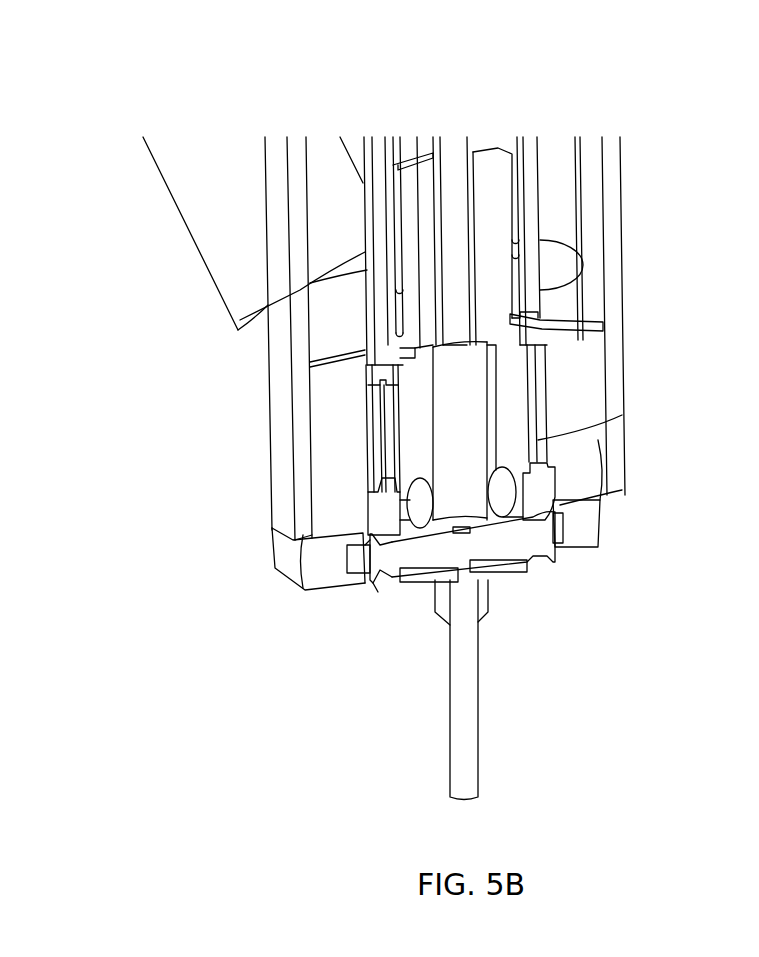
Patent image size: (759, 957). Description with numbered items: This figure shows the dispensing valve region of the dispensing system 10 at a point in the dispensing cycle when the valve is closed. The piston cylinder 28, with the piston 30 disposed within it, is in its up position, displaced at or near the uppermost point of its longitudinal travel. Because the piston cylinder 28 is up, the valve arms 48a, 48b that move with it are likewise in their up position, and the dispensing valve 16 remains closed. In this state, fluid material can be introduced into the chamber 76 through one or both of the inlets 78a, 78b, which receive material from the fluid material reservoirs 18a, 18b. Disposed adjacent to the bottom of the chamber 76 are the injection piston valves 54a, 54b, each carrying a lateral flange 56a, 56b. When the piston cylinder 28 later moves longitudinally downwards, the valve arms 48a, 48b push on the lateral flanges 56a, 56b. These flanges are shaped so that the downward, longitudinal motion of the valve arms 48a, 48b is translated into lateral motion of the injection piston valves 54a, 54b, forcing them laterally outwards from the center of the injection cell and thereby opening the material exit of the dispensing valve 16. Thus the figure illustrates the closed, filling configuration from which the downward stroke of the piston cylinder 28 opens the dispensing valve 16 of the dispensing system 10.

The dispensing system 10 is at (438, 99).
The dispensing valve 16 is at (508, 636).
The reservoir 18a is at (553, 165).
The reservoir 18b is at (222, 225).
The piston cylinder 28 is at (472, 140).
The piston 30 is at (453, 208).
The valve arm 48a is at (533, 308).
The valve arm 48b is at (363, 308).
The injection piston valve 54a is at (507, 548).
The injection piston valve 54b is at (418, 563).
The lateral flange 56a is at (550, 553).
The lateral flange 56b is at (370, 587).
The chamber 76 is at (462, 432).
The inlet 78a is at (500, 492).
The inlet 78b is at (420, 503).